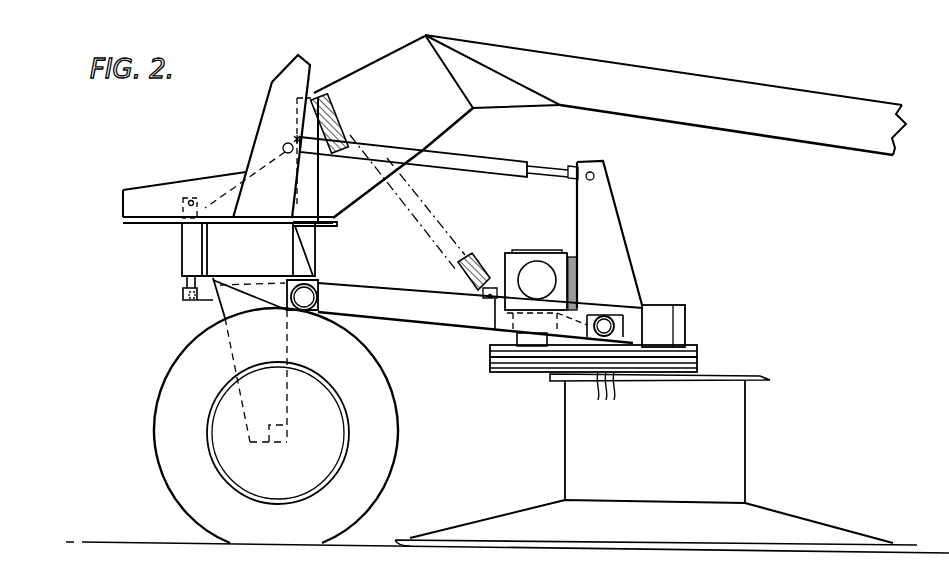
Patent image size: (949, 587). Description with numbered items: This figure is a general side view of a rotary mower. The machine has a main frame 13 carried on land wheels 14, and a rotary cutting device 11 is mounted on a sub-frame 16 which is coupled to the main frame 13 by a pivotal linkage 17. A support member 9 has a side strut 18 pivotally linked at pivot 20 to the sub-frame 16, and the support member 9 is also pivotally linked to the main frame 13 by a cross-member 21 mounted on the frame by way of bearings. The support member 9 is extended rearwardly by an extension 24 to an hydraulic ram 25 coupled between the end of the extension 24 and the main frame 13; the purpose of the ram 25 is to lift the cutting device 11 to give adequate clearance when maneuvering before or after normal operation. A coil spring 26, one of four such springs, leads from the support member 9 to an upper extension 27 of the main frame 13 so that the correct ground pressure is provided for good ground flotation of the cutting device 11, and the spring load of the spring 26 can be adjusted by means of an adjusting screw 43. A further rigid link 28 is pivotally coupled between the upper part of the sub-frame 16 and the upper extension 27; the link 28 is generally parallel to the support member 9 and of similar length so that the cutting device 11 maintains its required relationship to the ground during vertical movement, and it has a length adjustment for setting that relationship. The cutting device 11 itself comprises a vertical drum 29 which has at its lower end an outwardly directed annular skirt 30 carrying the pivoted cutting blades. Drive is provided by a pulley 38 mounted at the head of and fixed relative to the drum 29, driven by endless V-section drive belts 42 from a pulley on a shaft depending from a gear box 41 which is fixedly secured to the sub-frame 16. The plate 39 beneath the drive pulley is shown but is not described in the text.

The support member 9 is at (422, 295).
The rotary cutting device 11 is at (785, 361).
The main frame 13 is at (227, 252).
The land wheels 14 is at (167, 381).
The sub-frame 16 is at (653, 292).
The pivotal linkage 17 is at (443, 332).
The side strut 18 is at (383, 313).
The pivot 20 is at (609, 314).
The cross-member 21 is at (305, 298).
The extension 24 is at (200, 300).
The hydraulic ram 25 is at (190, 242).
The coil spring 26 is at (340, 113).
The upper extension 27 is at (283, 73).
The rigid link 28 is at (450, 167).
The drum 29 is at (746, 421).
The skirt 30 is at (810, 523).
The pulley 38 is at (697, 352).
The mounting plate 39 is at (523, 371).
The gear box 41 is at (540, 250).
The drive belts 42 is at (606, 400).
The adjusting screw 43 is at (311, 97).